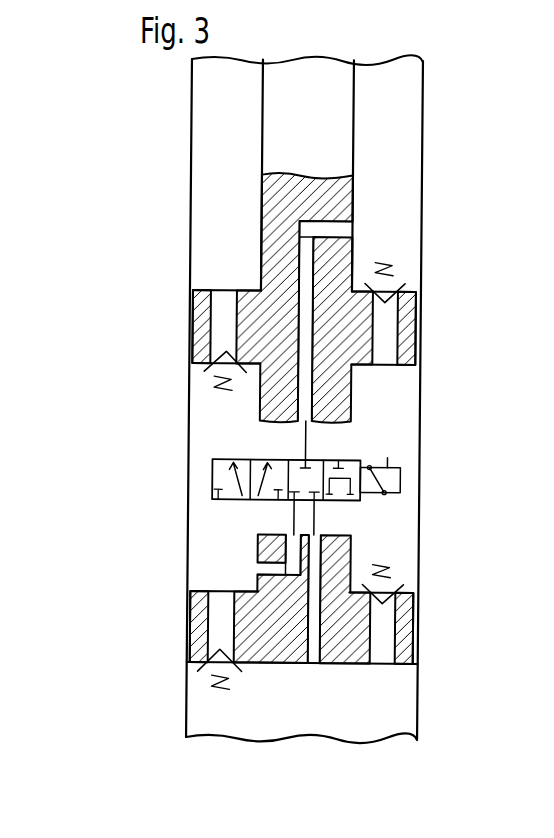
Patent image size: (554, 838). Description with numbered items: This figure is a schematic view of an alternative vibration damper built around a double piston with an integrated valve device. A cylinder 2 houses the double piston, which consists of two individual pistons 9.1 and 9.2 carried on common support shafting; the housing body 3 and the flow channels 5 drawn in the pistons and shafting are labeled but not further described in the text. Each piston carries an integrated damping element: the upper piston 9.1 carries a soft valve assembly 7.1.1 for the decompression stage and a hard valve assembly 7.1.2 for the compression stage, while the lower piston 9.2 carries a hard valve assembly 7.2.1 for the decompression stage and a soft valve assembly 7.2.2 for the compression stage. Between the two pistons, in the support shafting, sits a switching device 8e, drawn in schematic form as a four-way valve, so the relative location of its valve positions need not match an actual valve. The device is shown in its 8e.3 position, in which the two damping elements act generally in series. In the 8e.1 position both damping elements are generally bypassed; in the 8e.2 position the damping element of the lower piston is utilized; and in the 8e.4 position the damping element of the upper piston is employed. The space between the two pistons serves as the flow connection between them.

The cylinder 2 is at (423, 117).
The housing body with bore 3 is at (406, 169).
The channel 5 is at (346, 230).
The soft valve assembly 7.1.1 is at (204, 373).
The hard valve assembly 7.1.2 is at (404, 283).
The hard valve assembly 7.2.1 is at (203, 673).
The soft valve assembly 7.2.2 is at (405, 584).
The piston 9.1 is at (410, 329).
The piston 9.2 is at (404, 621).
The switching device 8e is at (354, 460).
The switching device position 8e.1 is at (219, 476).
The switching device position 8e.2 is at (258, 460).
The switching device position 8e.3 is at (296, 460).
The switching device position 8e.4 is at (344, 500).